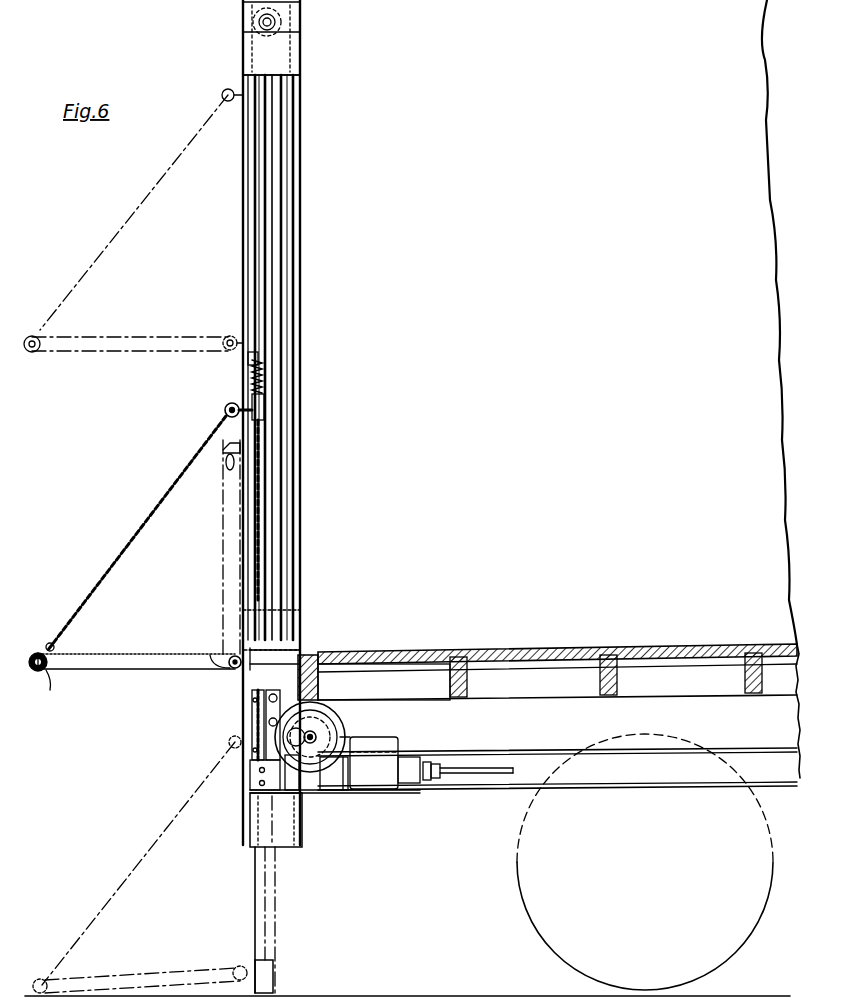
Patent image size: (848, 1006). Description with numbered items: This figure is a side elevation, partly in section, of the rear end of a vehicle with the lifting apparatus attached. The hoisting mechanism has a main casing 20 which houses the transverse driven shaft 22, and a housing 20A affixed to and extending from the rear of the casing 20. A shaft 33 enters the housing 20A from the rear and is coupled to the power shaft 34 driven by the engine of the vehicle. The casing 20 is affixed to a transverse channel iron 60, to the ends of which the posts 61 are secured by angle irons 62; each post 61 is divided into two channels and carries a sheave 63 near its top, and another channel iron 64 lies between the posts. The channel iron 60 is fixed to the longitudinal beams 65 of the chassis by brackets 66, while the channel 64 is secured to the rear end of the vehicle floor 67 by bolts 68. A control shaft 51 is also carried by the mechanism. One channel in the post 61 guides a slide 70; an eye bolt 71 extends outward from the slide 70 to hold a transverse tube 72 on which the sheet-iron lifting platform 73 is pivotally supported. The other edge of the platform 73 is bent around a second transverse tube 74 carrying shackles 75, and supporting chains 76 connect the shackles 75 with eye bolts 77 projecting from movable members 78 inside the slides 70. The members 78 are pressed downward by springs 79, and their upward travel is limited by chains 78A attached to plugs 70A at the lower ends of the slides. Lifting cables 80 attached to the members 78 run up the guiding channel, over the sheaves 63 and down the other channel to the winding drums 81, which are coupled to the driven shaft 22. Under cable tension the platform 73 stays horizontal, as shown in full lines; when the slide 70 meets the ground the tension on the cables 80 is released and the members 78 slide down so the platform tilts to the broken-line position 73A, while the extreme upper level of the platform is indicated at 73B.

The main casing 20 is at (335, 717).
The housing 20A is at (400, 742).
The transverse driven shaft 22 is at (318, 737).
The shaft 33 is at (416, 782).
The power shaft 34 is at (470, 776).
The control shaft 51 is at (384, 682).
The transverse channel iron 60 is at (252, 708).
The post 61 is at (300, 257).
The angle iron 62 is at (252, 728).
The sheave 63 is at (243, 27).
The channel iron 64 is at (285, 650).
The longitudinal beam 65 is at (533, 755).
The bracket 66 is at (252, 776).
The floor 67 is at (430, 650).
The bolt 68 is at (310, 655).
The slide 70 is at (266, 356).
The plug 70A is at (270, 972).
The eye bolt 71 is at (240, 669).
The transverse tube 72 is at (211, 658).
The lifting platform 73 is at (116, 653).
The tilted platform position 73A is at (145, 974).
The extreme upper platform level 73B is at (120, 336).
The transverse tube 74 is at (50, 691).
The shackle 75 is at (40, 652).
The supporting chain 76 is at (135, 525).
The eye bolt 77 is at (232, 404).
The movable member 78 is at (268, 405).
The chain 78A is at (270, 508).
The spring 79 is at (236, 338).
The lifting cable 80 is at (300, 207).
The winding drum 81 is at (345, 705).